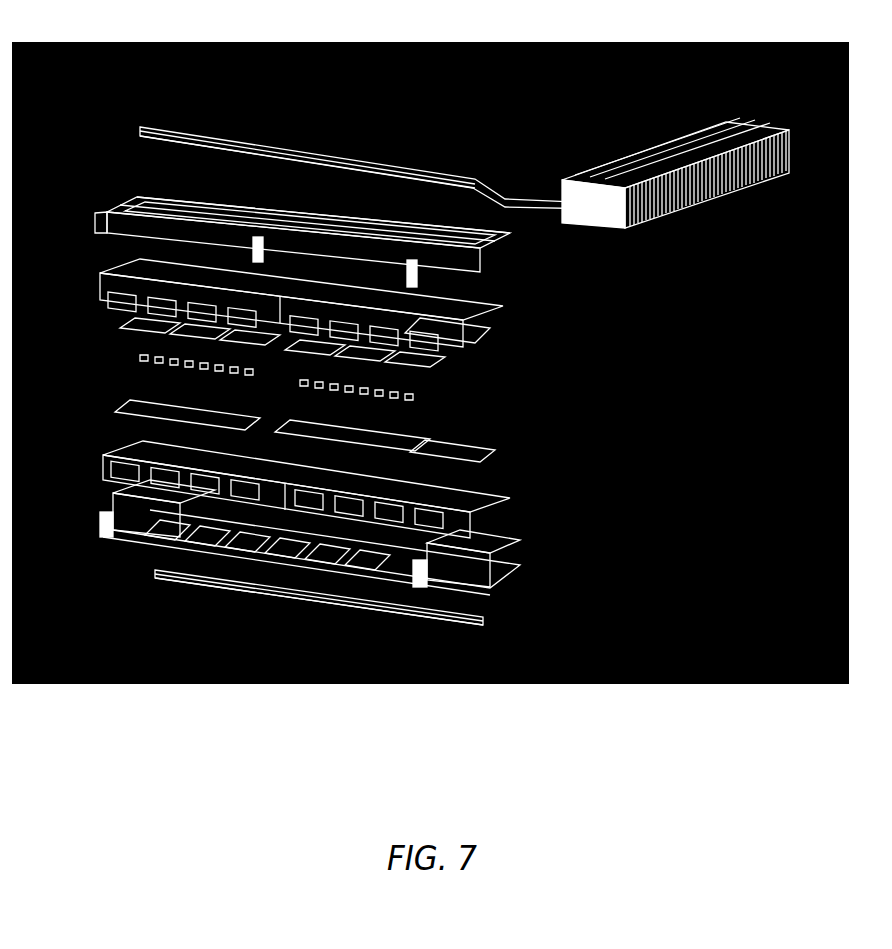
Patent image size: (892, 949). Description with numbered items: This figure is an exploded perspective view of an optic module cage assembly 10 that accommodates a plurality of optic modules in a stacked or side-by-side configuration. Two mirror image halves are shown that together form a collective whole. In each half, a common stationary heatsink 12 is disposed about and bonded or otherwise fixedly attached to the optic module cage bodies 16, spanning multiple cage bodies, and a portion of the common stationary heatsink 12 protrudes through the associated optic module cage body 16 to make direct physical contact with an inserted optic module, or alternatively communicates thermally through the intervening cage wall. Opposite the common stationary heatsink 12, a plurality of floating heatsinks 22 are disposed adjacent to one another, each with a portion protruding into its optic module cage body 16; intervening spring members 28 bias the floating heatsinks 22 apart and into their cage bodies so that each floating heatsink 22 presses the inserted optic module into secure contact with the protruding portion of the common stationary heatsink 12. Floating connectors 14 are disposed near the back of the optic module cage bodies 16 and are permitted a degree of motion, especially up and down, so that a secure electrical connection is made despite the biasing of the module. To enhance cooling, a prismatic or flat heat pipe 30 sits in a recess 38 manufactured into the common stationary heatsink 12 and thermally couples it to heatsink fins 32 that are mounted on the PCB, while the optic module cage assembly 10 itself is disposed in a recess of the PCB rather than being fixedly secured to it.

The optic module cage assembly 10 is at (313, 121).
The common stationary heatsink 12 is at (352, 217).
The floating connector 14 is at (479, 318).
The optic module cage body 16 is at (113, 257).
The floating heatsink 22 is at (425, 296).
The spring member 28 is at (435, 415).
The heat pipe 30 is at (447, 178).
The heatsink fins 32 is at (635, 153).
The recess 38 is at (392, 222).